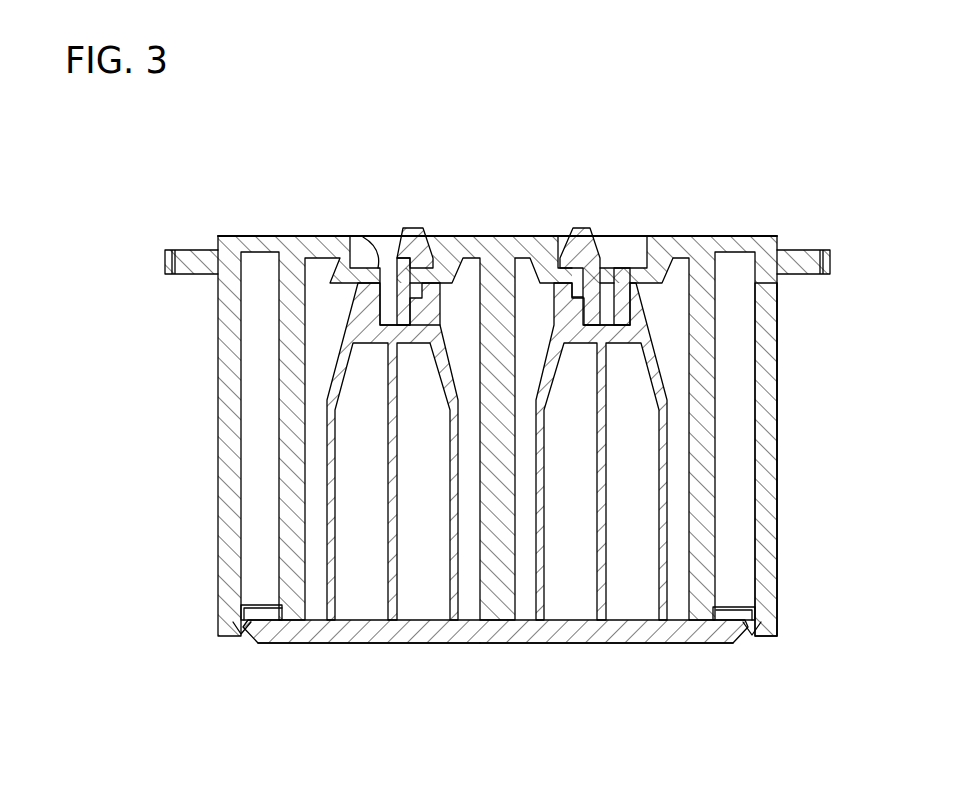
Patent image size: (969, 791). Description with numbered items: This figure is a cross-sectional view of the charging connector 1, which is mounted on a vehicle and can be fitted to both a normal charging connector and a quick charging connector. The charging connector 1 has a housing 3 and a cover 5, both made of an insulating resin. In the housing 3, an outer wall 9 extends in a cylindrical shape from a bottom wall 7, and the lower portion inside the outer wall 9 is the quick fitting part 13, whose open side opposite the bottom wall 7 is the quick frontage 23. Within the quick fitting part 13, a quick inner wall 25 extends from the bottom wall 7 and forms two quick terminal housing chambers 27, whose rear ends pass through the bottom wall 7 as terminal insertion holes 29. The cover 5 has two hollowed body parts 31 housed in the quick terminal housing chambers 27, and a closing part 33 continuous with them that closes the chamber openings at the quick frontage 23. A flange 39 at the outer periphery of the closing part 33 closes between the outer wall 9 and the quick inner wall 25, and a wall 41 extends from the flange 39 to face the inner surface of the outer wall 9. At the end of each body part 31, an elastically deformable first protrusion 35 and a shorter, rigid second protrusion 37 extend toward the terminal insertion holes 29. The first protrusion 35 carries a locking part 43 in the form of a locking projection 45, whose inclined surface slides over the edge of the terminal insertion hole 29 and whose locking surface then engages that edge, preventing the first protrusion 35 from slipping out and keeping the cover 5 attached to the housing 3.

The charging connector 1 is at (525, 398).
The housing 3 is at (747, 227).
The cover 5 is at (477, 652).
The bottom wall 7 is at (670, 243).
The outer wall 9 is at (772, 415).
The quick fitting part 13 is at (789, 530).
The quick frontage 23 is at (253, 642).
The quick inner wall 25 is at (296, 608).
The quick terminal housing chambers 27 is at (533, 537).
The terminal insertion holes 29 is at (358, 235).
The body parts 31 is at (612, 537).
The closing part 33 is at (397, 640).
The first protrusion 35 is at (405, 230).
The second protrusion 37 is at (622, 252).
The flange 39 is at (727, 643).
The wall 41 is at (750, 613).
The locking part 43 is at (436, 224).
The locking projection 45 is at (575, 230).